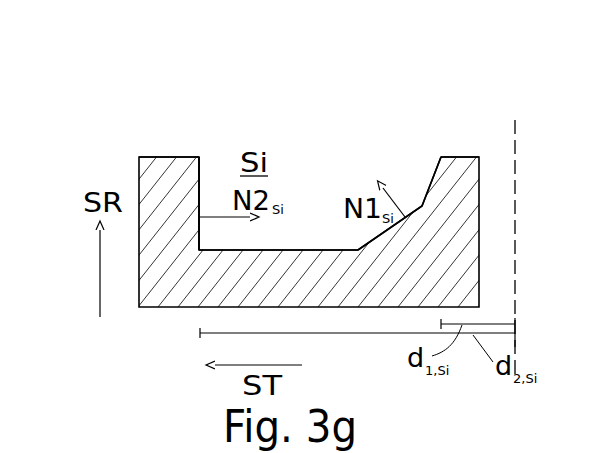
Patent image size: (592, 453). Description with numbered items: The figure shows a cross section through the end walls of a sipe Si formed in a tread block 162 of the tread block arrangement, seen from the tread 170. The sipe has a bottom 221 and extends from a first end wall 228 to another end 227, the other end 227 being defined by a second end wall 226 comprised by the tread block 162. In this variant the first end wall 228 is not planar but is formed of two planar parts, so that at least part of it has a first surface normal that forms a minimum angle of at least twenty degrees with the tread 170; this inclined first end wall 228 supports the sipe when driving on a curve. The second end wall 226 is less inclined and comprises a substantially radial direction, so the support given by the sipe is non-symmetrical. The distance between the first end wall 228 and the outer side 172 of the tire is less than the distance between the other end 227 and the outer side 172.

The tread block 162 is at (150, 168).
The tread 170 is at (158, 148).
The other end of the sipe 227 is at (235, 149).
The second end wall 226 is at (203, 180).
The bottom 221 is at (301, 242).
The first end wall 228 is at (415, 178).
The outer side of the tire 172 is at (515, 120).